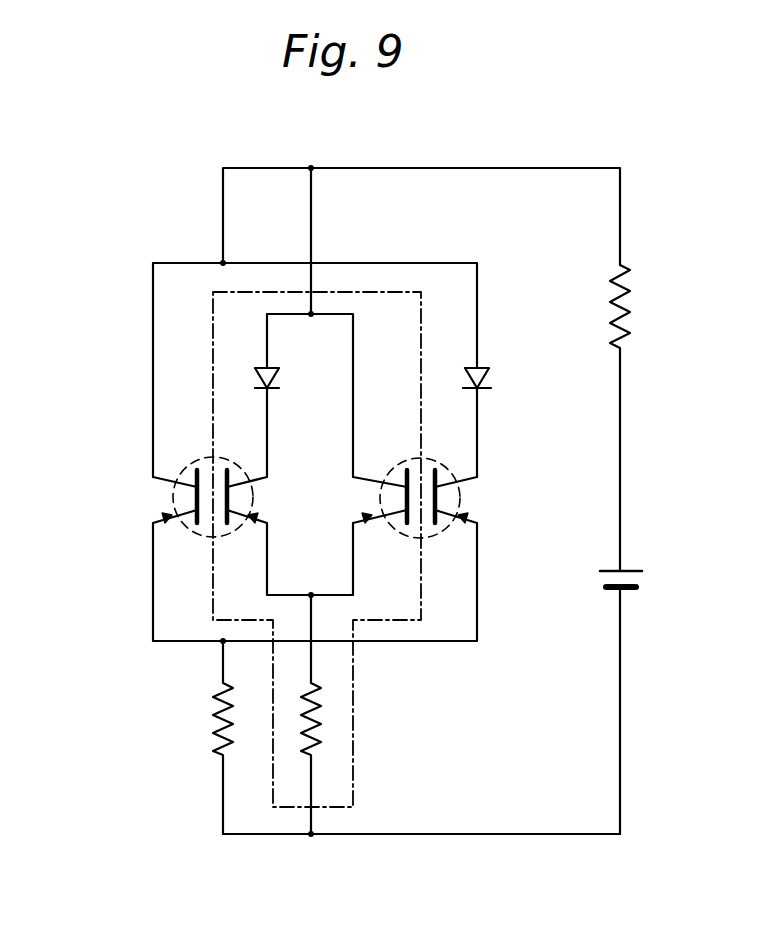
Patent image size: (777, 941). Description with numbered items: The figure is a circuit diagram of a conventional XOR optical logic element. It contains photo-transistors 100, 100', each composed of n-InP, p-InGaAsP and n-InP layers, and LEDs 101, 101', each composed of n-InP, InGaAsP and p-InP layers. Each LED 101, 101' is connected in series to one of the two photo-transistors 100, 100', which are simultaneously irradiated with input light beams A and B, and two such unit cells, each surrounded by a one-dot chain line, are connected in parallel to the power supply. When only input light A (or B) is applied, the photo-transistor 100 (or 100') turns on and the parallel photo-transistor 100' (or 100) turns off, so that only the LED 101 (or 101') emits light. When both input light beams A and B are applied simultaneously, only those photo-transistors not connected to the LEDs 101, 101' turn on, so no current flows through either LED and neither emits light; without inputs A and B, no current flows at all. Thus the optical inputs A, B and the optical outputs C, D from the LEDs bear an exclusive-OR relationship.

The photo-transistor 100 is at (199, 497).
The photo-transistor 100' is at (425, 498).
The LED 101 is at (297, 391).
The LED 101' is at (515, 399).
The input light beam A is at (188, 540).
The input light beam B is at (442, 548).
The optical output C is at (237, 365).
The optical output D is at (490, 360).